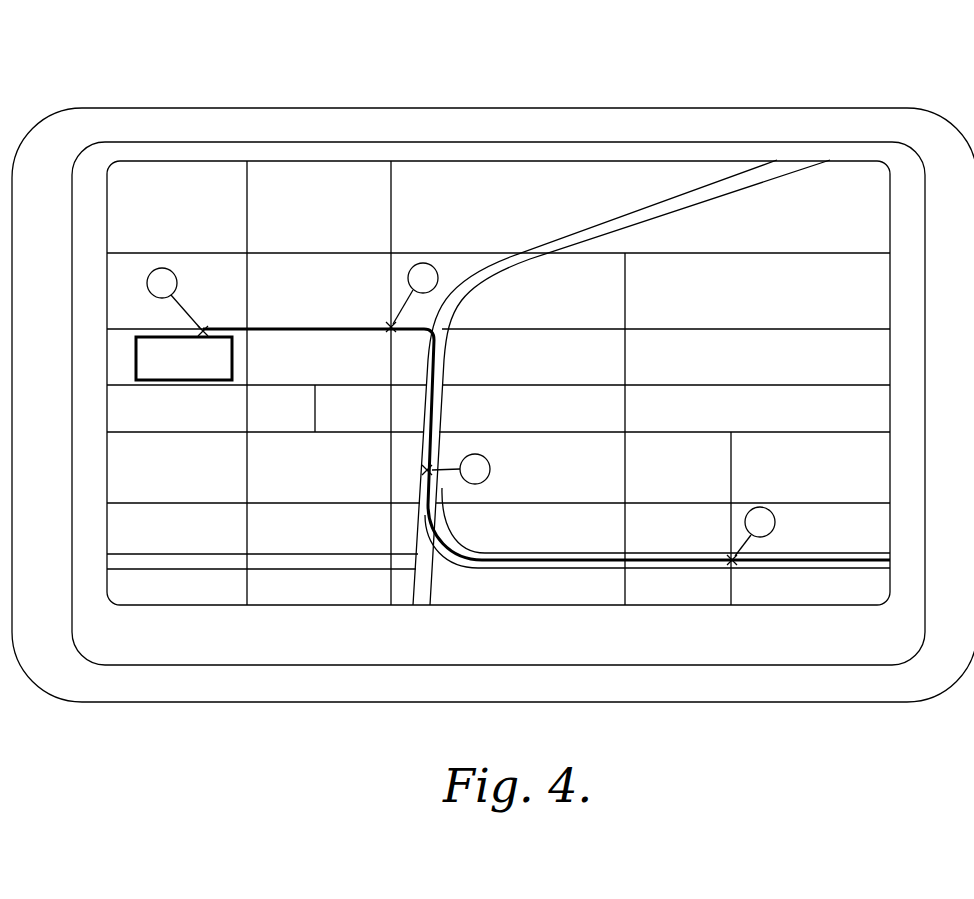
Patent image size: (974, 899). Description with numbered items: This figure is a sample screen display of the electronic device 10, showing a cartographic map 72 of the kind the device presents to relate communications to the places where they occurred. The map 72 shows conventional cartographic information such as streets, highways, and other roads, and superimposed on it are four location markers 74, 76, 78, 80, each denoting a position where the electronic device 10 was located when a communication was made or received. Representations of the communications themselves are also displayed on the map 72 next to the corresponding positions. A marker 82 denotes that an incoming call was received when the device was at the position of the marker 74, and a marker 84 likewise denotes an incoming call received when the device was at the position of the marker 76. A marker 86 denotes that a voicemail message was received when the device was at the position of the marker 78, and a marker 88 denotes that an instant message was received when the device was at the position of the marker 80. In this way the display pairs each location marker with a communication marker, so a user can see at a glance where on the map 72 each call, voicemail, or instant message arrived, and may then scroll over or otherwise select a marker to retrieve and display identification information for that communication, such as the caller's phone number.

The electronic device 10 is at (653, 80).
The map 72 is at (322, 175).
The location marker 74 is at (733, 562).
The location marker 76 is at (425, 470).
The location marker 78 is at (388, 330).
The location marker 80 is at (206, 330).
The incoming call marker 82 is at (775, 525).
The incoming call marker 84 is at (490, 466).
The voicemail marker 86 is at (425, 264).
The instant message marker 88 is at (162, 268).